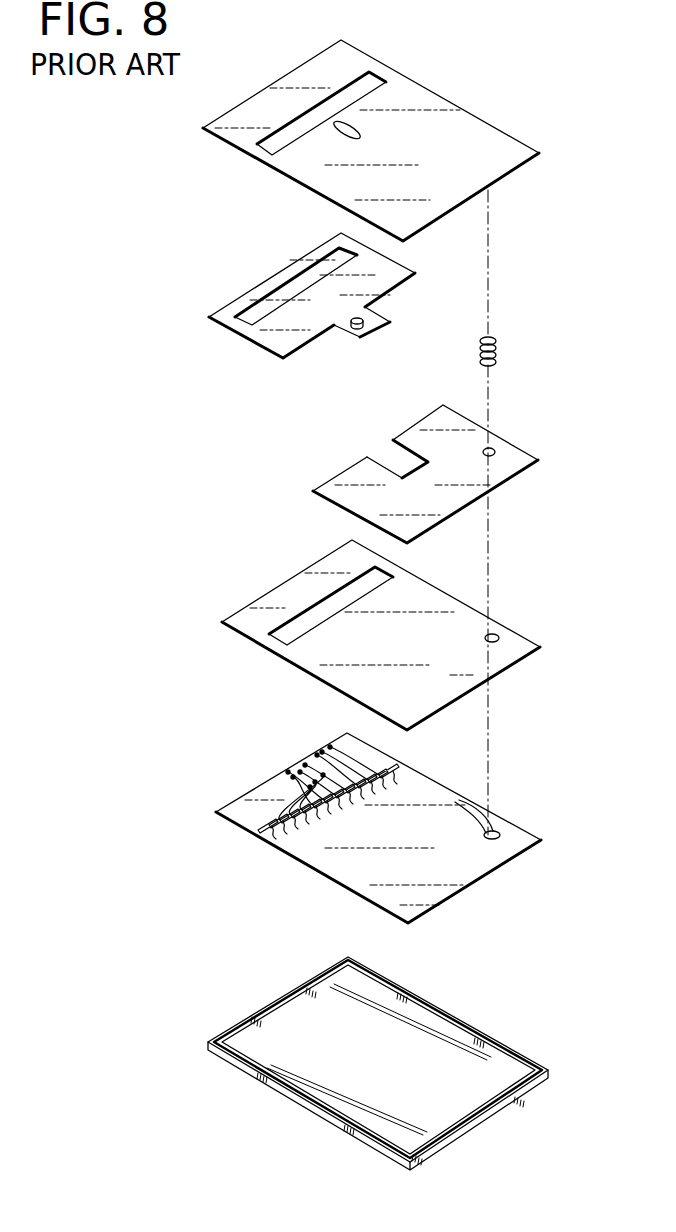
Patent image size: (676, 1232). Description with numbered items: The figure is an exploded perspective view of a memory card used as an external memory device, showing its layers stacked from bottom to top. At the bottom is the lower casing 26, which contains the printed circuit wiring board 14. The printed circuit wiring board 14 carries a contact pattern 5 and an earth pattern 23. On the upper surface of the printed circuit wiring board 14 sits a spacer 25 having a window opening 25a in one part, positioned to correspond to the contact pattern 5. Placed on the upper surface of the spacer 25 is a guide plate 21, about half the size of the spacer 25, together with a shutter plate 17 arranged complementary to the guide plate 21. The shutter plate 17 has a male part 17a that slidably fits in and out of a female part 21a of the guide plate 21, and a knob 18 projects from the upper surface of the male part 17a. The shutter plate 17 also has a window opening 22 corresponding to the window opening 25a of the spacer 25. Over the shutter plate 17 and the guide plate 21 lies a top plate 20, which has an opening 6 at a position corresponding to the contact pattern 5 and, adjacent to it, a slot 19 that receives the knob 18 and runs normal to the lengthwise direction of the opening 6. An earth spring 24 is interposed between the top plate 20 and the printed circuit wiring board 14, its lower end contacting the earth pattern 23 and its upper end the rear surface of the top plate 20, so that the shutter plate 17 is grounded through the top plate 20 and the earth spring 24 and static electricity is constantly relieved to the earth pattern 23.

The contact pattern 5 is at (270, 830).
The opening 6 is at (372, 79).
The printed circuit wiring board 14 is at (485, 868).
The shutter plate 17 is at (278, 345).
The male part 17a is at (358, 338).
The knob 18 is at (366, 317).
The slot 19 is at (360, 128).
The top plate 20 is at (505, 137).
The guide plate 21 is at (517, 468).
The female part 21a is at (407, 450).
The window opening 22 is at (228, 332).
The earth pattern 23 is at (501, 833).
The earth spring 24 is at (496, 352).
The spacer 25 is at (518, 638).
The window opening 25a is at (305, 615).
The lower casing 26 is at (510, 1047).